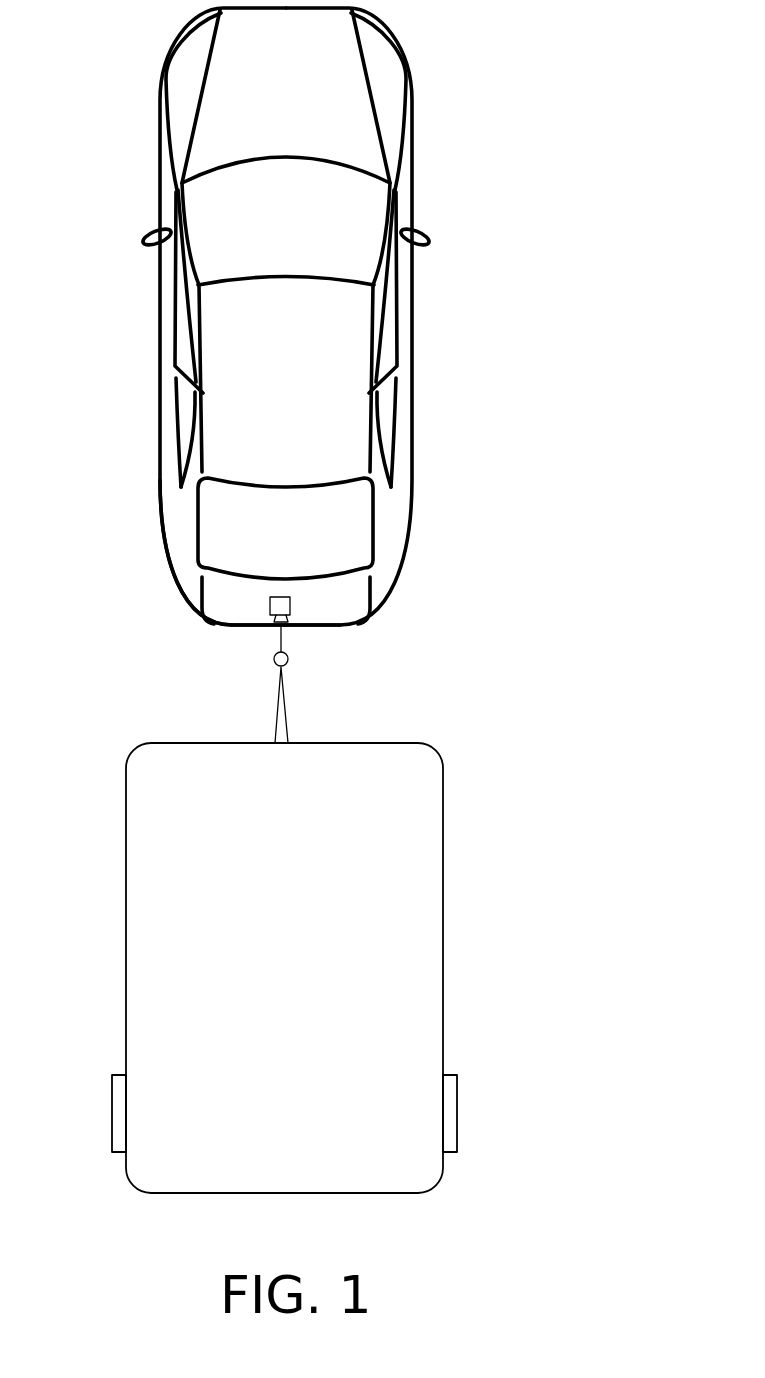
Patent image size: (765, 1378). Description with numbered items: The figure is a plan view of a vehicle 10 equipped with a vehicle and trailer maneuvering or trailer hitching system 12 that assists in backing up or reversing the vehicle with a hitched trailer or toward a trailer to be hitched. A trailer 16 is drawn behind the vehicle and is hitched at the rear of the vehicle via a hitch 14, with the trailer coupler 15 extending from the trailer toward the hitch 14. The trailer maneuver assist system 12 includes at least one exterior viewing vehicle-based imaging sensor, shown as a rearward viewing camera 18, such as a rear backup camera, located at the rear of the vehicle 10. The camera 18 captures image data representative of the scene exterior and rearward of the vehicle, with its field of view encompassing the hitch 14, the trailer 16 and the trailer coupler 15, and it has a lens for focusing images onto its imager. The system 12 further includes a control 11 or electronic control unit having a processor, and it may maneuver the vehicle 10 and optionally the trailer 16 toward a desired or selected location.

The vehicle 10 is at (270, 344).
The control 11 is at (242, 632).
The trailer hitching system 12 is at (118, 584).
The hitch 14 is at (288, 662).
The trailer coupler 15 is at (275, 728).
The trailer 16 is at (150, 771).
The camera 18 is at (292, 612).